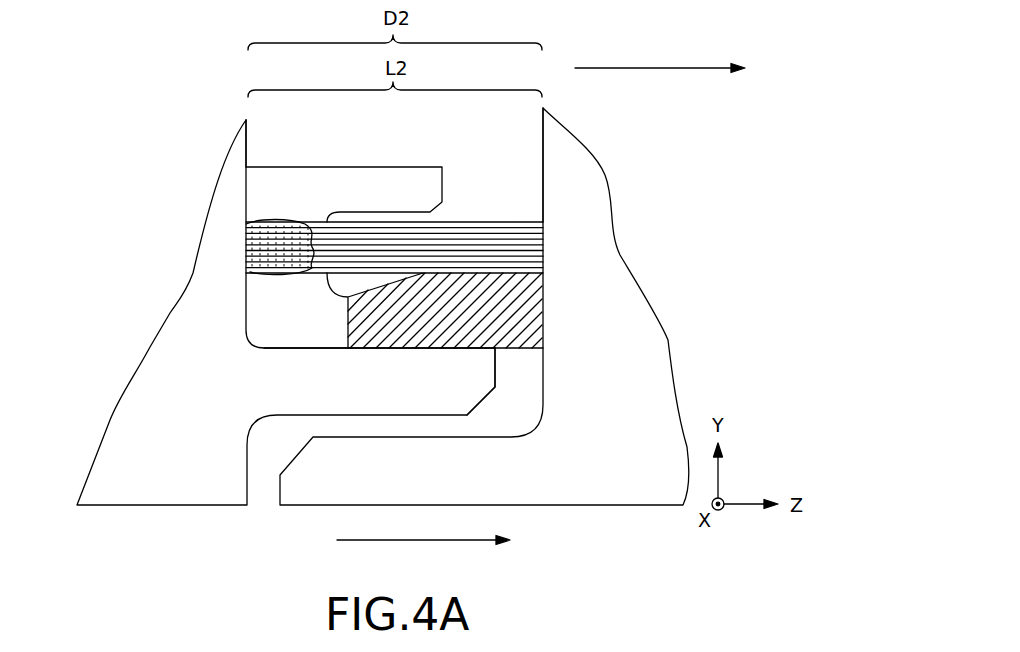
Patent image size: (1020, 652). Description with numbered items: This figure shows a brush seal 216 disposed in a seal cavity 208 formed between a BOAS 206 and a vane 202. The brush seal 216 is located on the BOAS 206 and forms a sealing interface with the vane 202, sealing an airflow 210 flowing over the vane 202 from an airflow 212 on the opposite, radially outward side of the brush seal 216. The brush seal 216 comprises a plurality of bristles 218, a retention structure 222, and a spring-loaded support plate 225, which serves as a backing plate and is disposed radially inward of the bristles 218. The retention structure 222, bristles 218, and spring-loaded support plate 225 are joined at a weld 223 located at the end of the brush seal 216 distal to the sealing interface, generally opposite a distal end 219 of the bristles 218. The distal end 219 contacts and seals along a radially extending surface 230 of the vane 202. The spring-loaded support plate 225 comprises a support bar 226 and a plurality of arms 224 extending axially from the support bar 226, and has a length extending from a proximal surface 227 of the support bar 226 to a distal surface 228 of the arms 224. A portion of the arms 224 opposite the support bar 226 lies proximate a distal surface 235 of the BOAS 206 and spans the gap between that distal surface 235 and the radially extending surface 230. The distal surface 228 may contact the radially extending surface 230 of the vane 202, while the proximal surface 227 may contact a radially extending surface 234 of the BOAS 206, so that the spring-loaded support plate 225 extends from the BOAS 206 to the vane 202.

The vane 202 is at (599, 469).
The BOAS 206 is at (184, 441).
The seal cavity 208 is at (234, 98).
The airflow 210 is at (406, 544).
The airflow 212 is at (642, 70).
The brush seal 216 is at (362, 166).
The bristles 218 is at (470, 240).
The distal end 219 is at (546, 250).
The retention structure 222 is at (319, 201).
The weld 223 is at (247, 232).
The arms 224 is at (530, 328).
The spring-loaded support plate 225 is at (408, 352).
The support bar 226 is at (288, 335).
The proximal surface 227 is at (246, 297).
The distal surface 228 is at (546, 307).
The radially extending surface 230 is at (543, 180).
The radially extending surface 234 is at (248, 148).
The distal surface 235 is at (497, 355).